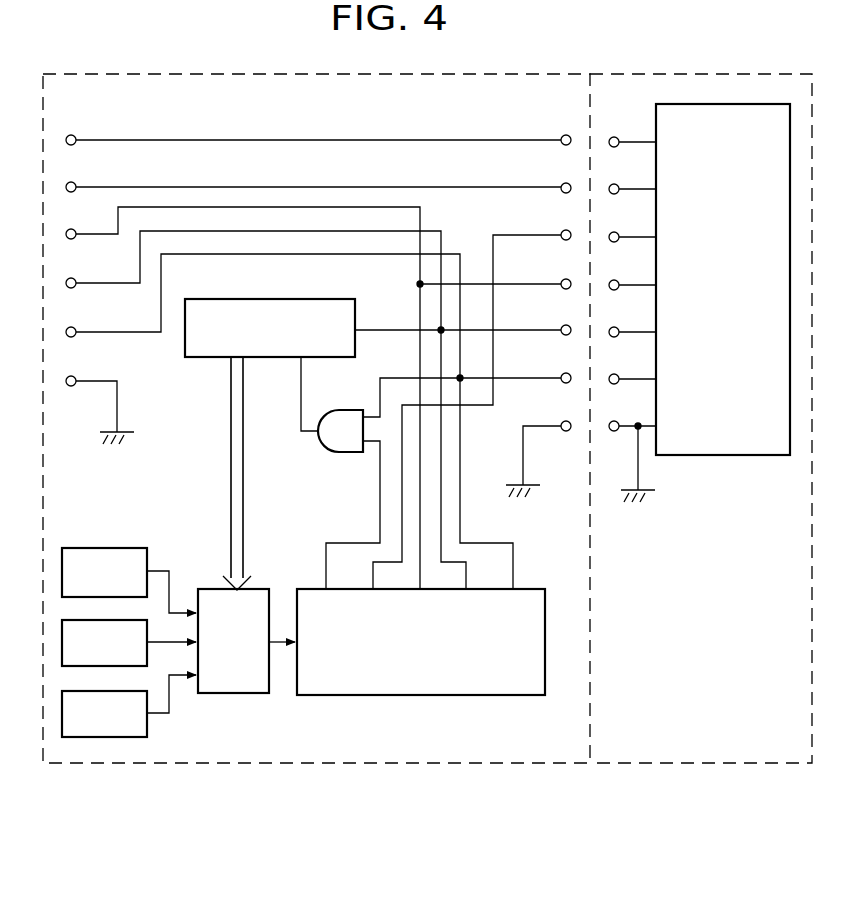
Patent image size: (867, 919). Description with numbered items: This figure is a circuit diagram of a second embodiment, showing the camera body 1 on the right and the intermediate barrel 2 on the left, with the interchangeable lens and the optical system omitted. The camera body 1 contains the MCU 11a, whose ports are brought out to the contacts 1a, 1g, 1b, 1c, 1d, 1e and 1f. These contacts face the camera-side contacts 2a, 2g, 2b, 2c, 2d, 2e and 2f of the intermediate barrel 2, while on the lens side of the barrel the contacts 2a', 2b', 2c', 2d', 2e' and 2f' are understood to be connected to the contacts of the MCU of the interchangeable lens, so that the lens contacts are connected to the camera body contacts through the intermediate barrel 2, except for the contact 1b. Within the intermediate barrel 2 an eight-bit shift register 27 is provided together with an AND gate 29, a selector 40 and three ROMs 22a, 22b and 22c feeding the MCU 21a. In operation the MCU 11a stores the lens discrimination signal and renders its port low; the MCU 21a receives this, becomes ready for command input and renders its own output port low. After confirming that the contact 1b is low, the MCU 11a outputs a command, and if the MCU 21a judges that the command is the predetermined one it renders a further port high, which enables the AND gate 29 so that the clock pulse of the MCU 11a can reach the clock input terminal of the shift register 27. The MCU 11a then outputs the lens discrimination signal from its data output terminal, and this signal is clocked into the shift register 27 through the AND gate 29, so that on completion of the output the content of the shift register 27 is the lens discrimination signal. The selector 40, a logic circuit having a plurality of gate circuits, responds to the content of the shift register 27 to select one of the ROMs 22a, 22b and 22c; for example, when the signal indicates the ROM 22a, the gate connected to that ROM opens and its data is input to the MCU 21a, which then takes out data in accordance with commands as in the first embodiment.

The camera body 1 is at (662, 763).
The intermediate barrel 2 is at (553, 763).
The contact 1a is at (612, 147).
The contact 1g is at (612, 194).
The contact 1b is at (612, 242).
The contact 1c is at (612, 290).
The contact 1d is at (612, 337).
The contact 1e is at (612, 384).
The contact 1f is at (612, 431).
The contact 2a is at (555, 155).
The contact 2g is at (564, 193).
The contact 2b is at (555, 251).
The contact 2c is at (555, 299).
The contact 2d is at (555, 346).
The contact 2e is at (555, 394).
The contact 2f is at (556, 441).
The contact 2a' is at (88, 156).
The contact 2b' is at (88, 203).
The contact 2c' is at (87, 250).
The contact 2d' is at (88, 299).
The contact 2e' is at (88, 348).
The contact 2f' is at (85, 397).
The MCU 11a is at (727, 455).
The MCU 21a is at (350, 695).
The ROM 22a is at (130, 548).
The ROM 22b is at (145, 644).
The ROM 22c is at (145, 724).
The shift register 27 is at (203, 357).
The AND gate 29 is at (340, 452).
The selector 40 is at (235, 693).